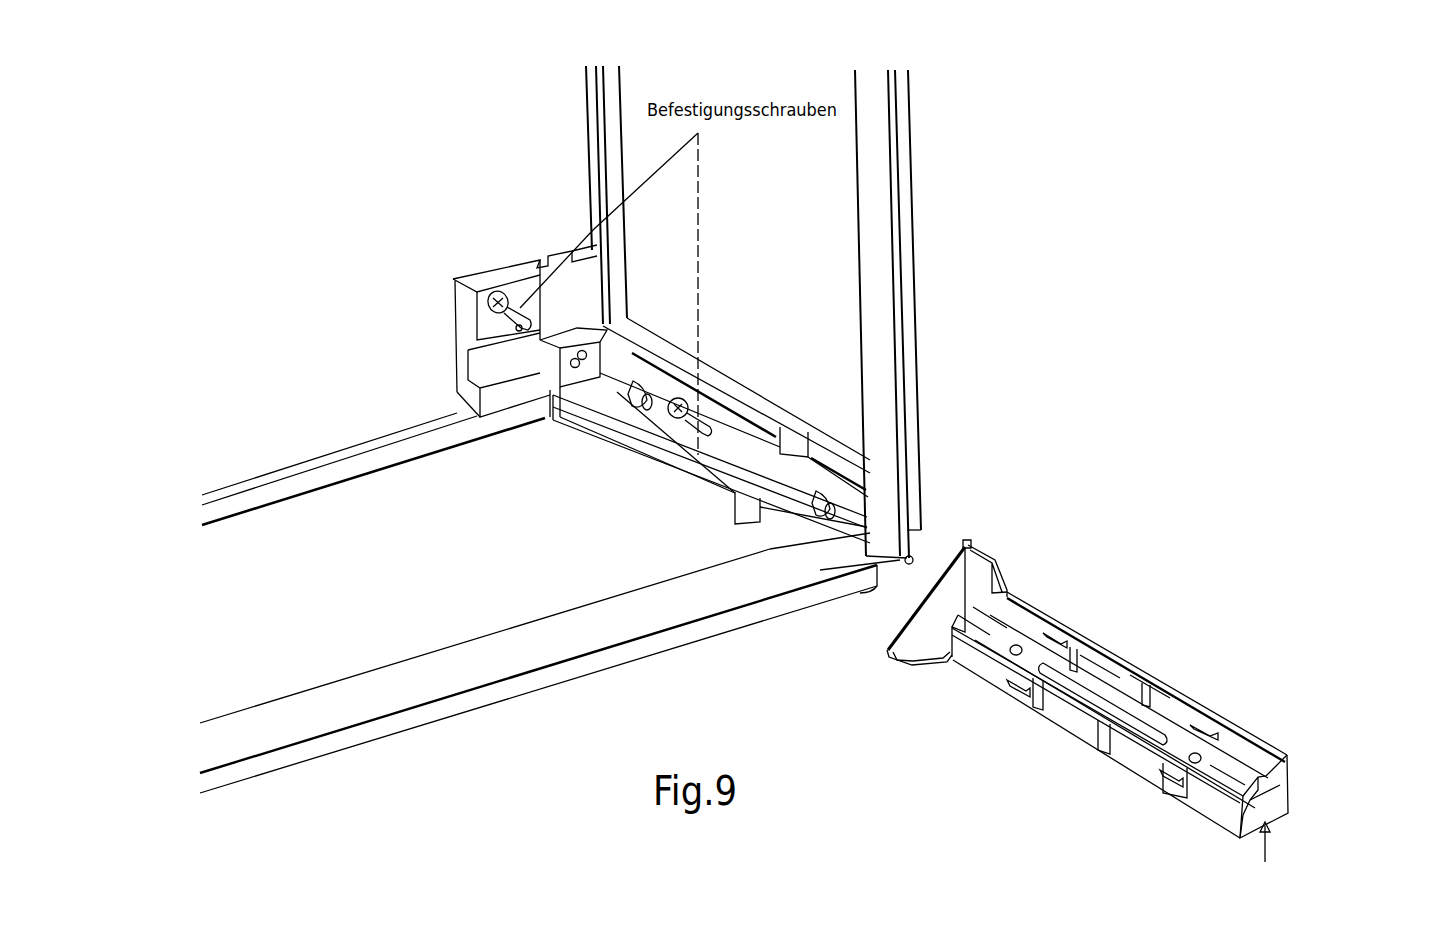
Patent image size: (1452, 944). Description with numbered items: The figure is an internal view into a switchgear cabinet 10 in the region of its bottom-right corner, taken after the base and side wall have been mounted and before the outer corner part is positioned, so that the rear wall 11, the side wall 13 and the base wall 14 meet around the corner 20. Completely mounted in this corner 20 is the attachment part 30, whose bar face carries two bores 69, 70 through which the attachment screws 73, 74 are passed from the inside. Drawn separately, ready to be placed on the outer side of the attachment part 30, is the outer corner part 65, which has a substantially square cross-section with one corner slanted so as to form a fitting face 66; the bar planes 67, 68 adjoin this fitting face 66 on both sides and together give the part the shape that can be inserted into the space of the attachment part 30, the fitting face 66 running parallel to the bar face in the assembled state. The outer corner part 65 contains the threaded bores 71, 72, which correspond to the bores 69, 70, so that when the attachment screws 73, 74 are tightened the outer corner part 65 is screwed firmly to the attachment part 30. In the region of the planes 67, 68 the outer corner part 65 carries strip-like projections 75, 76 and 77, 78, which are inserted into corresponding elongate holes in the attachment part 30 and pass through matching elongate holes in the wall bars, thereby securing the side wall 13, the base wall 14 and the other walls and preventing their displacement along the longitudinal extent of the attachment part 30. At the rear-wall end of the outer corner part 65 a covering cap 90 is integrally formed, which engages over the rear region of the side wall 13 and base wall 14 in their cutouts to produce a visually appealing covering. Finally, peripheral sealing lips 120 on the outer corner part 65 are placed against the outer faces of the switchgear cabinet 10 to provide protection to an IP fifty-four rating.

The switchgear cabinet 10 is at (1006, 226).
The rear wall 11 is at (438, 158).
The side wall 13 is at (806, 231).
The base wall 14 is at (550, 603).
The corner 20 is at (925, 557).
The attachment part 30 is at (778, 470).
The outer corner part 65 is at (1090, 660).
The fitting face 66 is at (1223, 773).
The bar plane 67 is at (1140, 678).
The bar plane 68 is at (1093, 727).
The bore 69 is at (627, 400).
The bore 70 is at (817, 497).
The threaded bore 71 is at (1017, 645).
The threaded bore 72 is at (1197, 757).
The attachment screw 73 is at (510, 298).
The attachment screw 74 is at (697, 413).
The strip-like projection 75 is at (1057, 635).
The strip-like projection 76 is at (1208, 730).
The strip-like projection 77 is at (1023, 686).
The strip-like projection 78 is at (1187, 773).
The covering cap 90 is at (977, 570).
The peripheral sealing lip 120 is at (1275, 748).